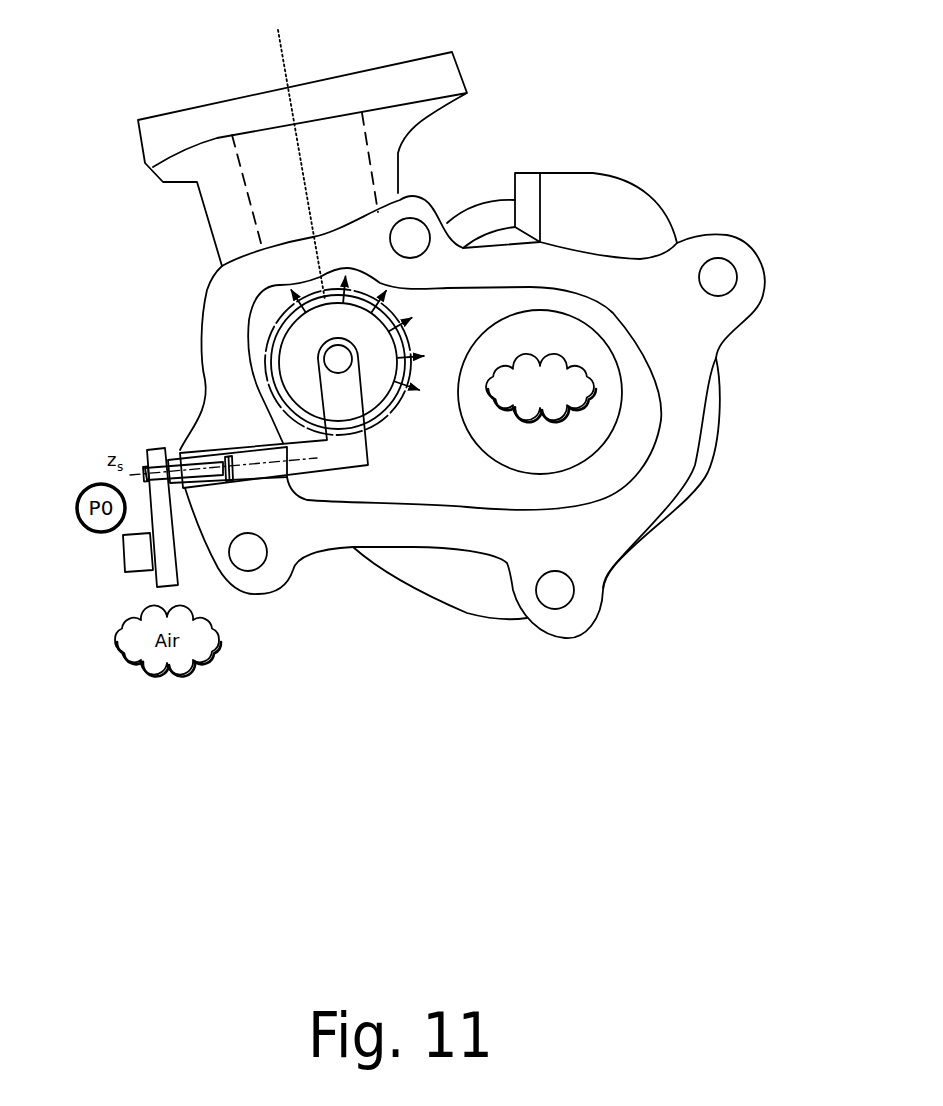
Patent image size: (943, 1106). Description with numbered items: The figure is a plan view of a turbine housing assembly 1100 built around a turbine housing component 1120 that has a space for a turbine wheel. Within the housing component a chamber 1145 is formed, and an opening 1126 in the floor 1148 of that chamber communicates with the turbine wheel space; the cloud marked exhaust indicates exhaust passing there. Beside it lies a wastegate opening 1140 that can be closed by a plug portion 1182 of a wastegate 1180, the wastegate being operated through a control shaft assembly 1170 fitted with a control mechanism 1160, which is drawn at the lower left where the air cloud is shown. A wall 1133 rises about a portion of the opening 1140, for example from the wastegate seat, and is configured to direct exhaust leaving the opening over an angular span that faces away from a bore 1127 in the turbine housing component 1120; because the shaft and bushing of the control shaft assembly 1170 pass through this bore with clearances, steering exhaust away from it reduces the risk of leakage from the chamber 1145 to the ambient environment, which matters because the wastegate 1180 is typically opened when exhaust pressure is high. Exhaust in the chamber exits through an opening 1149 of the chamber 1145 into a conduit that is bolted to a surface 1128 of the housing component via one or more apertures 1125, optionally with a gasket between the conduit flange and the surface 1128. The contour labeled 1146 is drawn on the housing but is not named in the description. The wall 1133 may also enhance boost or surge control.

The assembly 1100 is at (150, 67).
The turbine housing component 1120 is at (670, 223).
The apertures 1125 is at (728, 293).
The opening 1126 is at (528, 470).
The bore 1127 is at (238, 485).
The surface 1128 is at (712, 338).
The wall 1133 is at (268, 368).
The opening 1140 is at (280, 330).
The chamber 1145 is at (452, 307).
The housing inner wall 1146 is at (602, 293).
The floor 1148 is at (473, 338).
The opening 1149 is at (663, 403).
The control mechanism 1160 is at (155, 577).
The control shaft assembly 1170 is at (175, 427).
The wastegate 1180 is at (385, 468).
The plug portion 1182 is at (377, 393).